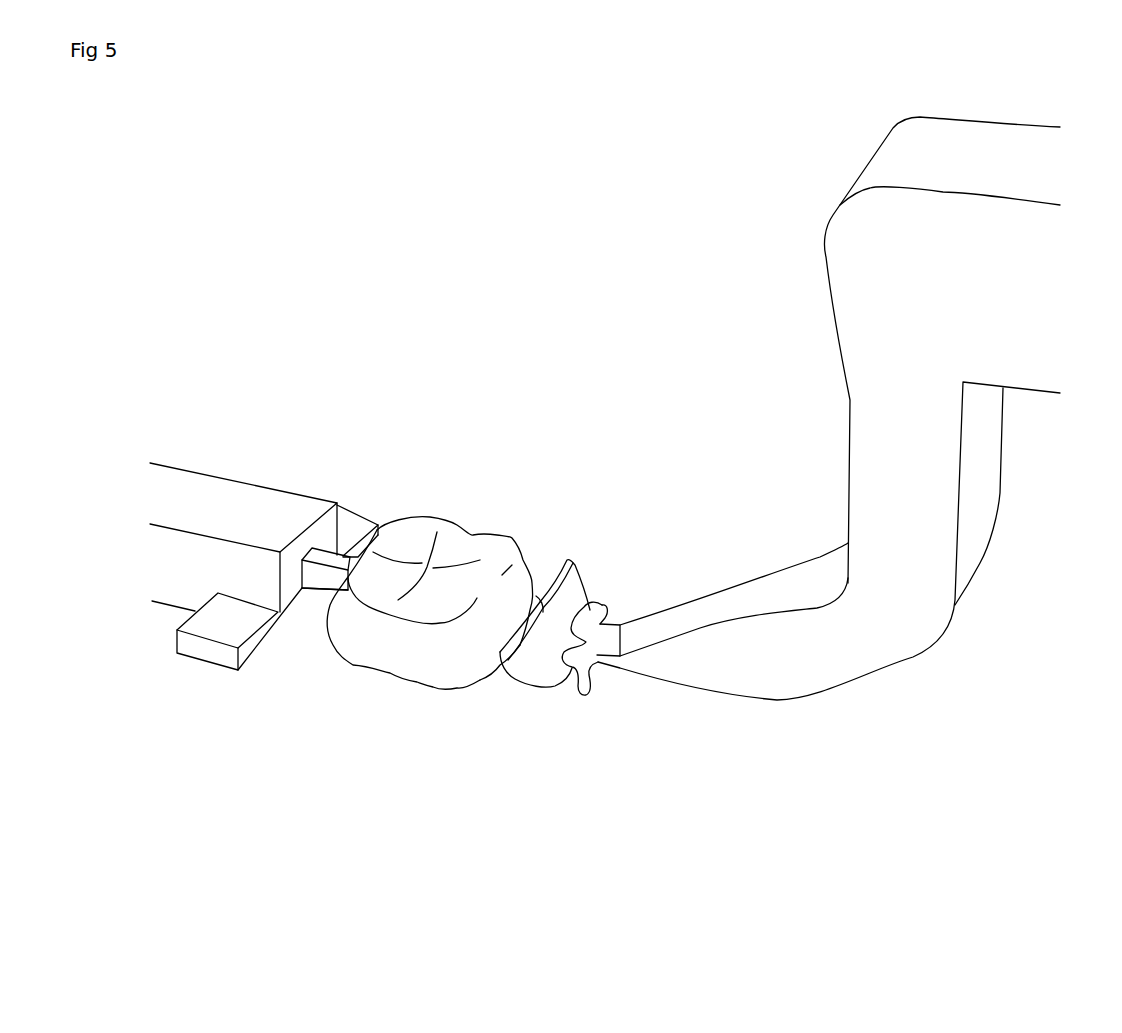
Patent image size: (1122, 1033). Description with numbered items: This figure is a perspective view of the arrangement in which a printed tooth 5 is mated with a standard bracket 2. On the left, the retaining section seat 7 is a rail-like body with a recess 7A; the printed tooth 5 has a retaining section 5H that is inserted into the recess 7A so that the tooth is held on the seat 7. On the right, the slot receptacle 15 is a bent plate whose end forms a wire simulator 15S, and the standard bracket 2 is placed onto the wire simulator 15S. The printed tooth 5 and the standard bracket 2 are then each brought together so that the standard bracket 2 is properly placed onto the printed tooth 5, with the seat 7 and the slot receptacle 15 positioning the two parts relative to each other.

The retaining section seat 7 is at (220, 513).
The recess 7A is at (302, 568).
The printed tooth 5 is at (420, 672).
The retaining section 5H is at (318, 580).
The standard bracket 2 is at (556, 695).
The slot receptacle 15 is at (747, 470).
The wire simulator 15S is at (613, 636).